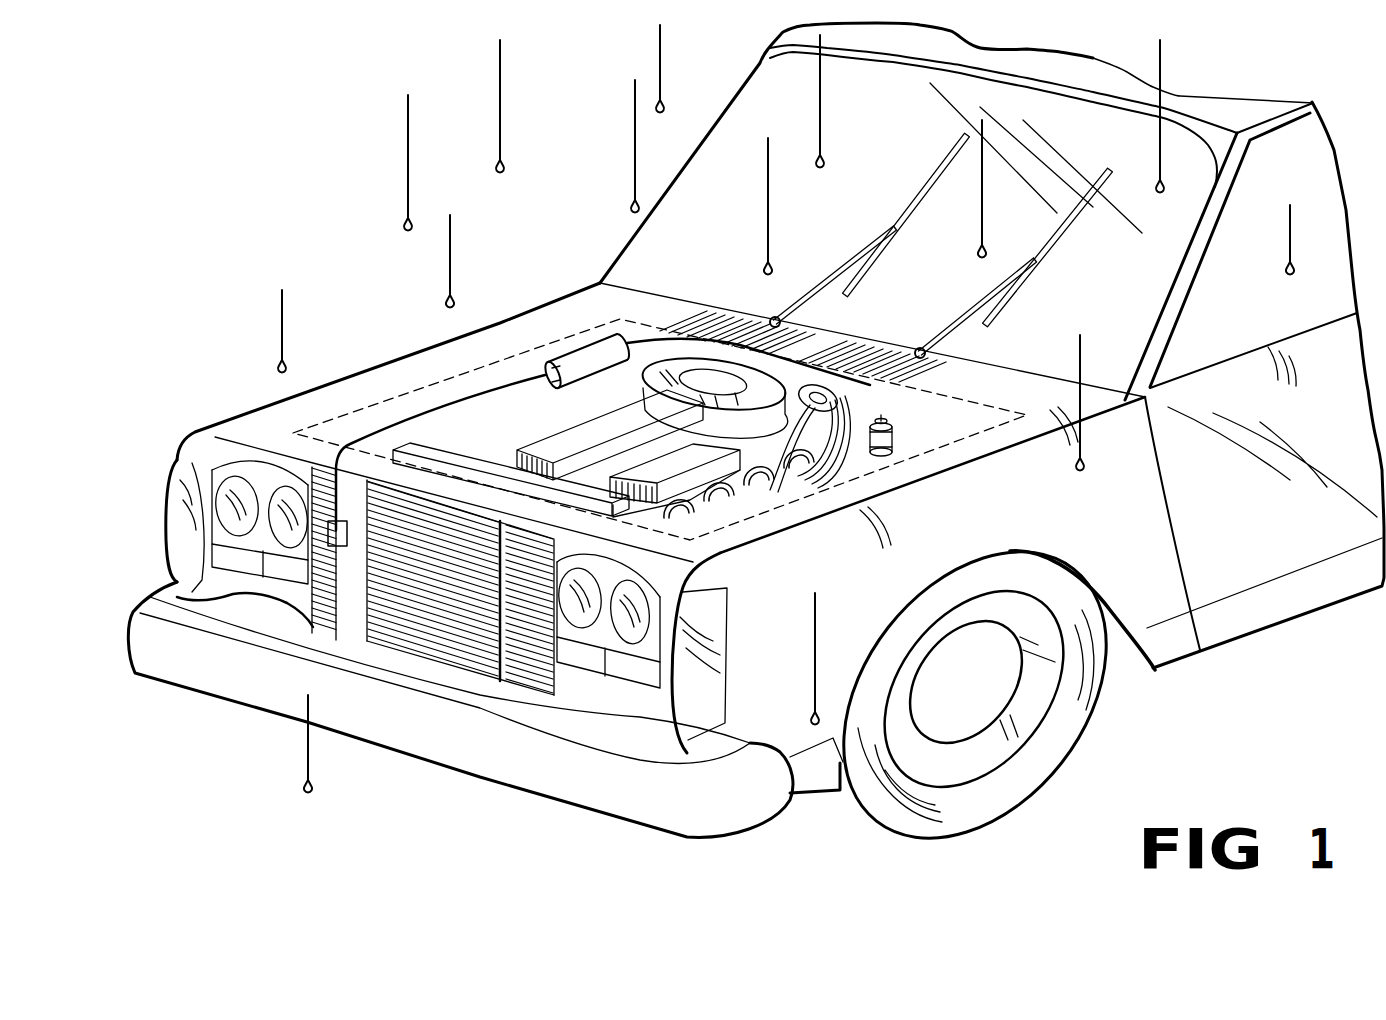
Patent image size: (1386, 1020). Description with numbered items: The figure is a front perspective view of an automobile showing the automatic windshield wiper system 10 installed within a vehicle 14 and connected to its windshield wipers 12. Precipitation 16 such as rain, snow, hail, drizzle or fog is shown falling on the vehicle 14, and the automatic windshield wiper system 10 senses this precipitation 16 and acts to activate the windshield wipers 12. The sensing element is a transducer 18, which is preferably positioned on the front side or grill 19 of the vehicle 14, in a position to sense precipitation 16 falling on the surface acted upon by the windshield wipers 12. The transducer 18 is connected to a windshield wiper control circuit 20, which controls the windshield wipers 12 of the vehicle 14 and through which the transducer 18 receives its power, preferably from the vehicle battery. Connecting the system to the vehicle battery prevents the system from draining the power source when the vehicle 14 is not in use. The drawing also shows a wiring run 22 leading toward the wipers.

The automatic windshield wiper system 10 is at (298, 556).
The windshield wipers 12 is at (862, 252).
The vehicle 14 is at (495, 320).
The precipitation 16 is at (408, 152).
The transducer 18 is at (338, 548).
The grill 19 is at (437, 650).
The windshield wiper control circuit 20 is at (548, 374).
The wiper motor wiring harness 22 is at (797, 378).